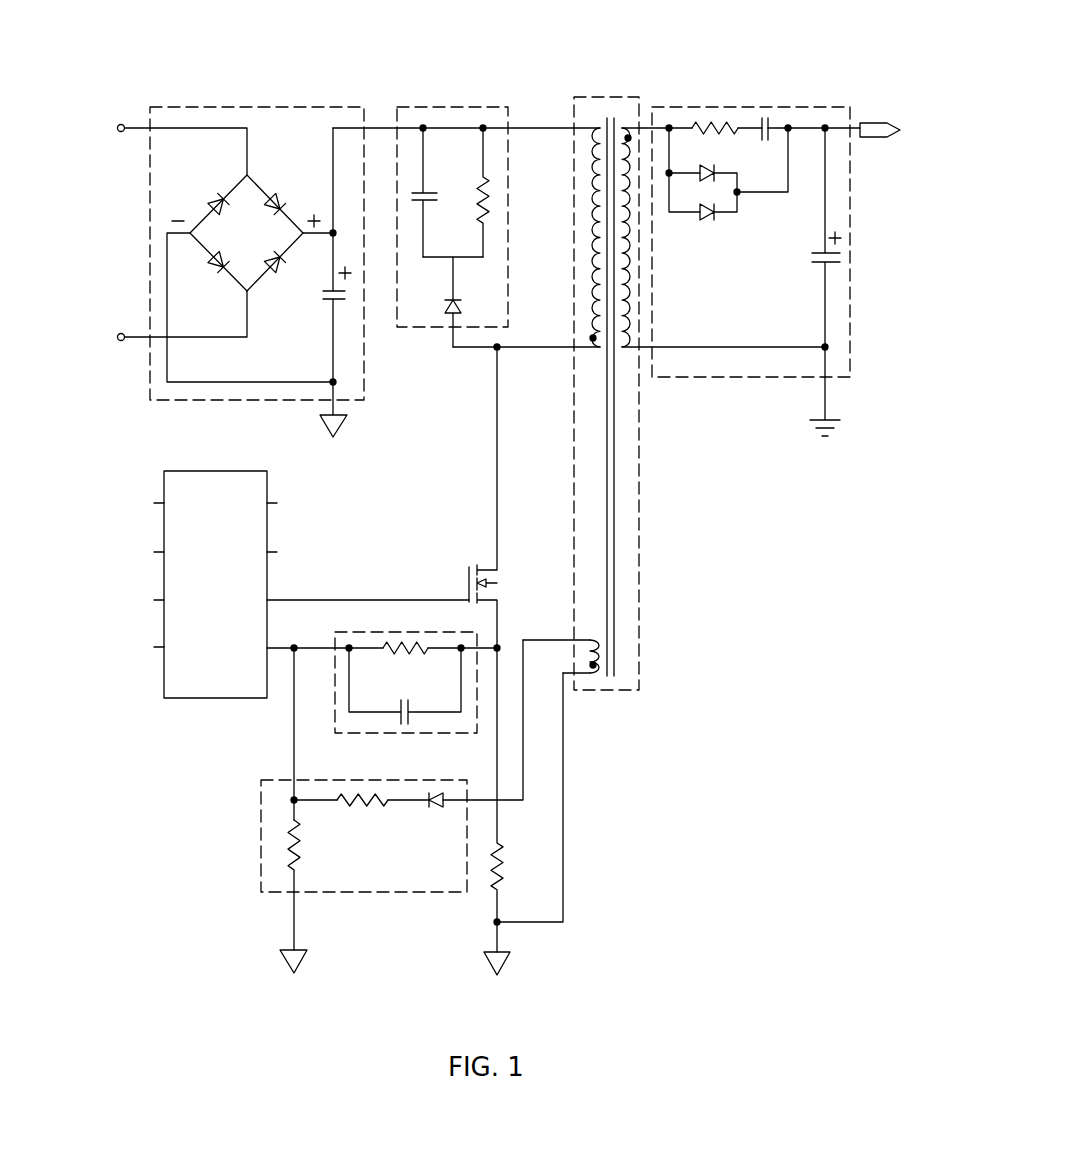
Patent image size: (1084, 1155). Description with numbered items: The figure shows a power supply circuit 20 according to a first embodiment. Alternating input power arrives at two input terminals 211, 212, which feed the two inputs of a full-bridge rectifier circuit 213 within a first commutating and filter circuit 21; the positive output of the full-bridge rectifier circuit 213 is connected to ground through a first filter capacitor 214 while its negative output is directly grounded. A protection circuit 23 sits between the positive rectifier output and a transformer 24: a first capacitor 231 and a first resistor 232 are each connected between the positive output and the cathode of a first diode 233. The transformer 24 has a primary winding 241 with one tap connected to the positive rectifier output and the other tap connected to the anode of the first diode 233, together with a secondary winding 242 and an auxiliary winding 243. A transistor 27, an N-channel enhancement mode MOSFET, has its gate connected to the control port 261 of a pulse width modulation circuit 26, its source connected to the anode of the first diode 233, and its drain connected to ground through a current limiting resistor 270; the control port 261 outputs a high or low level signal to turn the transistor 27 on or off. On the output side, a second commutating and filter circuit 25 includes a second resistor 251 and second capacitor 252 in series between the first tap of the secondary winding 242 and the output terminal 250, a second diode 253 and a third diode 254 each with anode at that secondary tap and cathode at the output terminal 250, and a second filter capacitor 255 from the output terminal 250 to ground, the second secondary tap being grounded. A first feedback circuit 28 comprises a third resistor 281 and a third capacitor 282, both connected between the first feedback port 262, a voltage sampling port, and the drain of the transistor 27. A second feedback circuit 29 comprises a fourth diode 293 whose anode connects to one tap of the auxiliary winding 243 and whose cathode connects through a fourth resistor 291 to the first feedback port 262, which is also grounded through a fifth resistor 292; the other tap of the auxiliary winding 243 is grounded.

The power supply circuit 20 is at (502, 487).
The first commutating and filter circuit 21 is at (328, 107).
The input terminal 211 is at (121, 124).
The input terminal 212 is at (121, 334).
The full-bridge rectifier circuit 213 is at (253, 208).
The first filter capacitor 214 is at (350, 298).
The protection circuit 23 is at (453, 105).
The first capacitor 231 is at (412, 197).
The first resistor 232 is at (488, 203).
The first diode 233 is at (463, 308).
The transformer 24 is at (598, 107).
The primary winding 241 is at (593, 322).
The secondary winding 242 is at (631, 330).
The auxiliary winding 243 is at (593, 657).
The second commutating and filter circuit 25 is at (723, 107).
The output terminal 250 is at (870, 123).
The second resistor 251 is at (707, 120).
The second capacitor 252 is at (765, 113).
The second diode 253 is at (708, 157).
The third diode 254 is at (709, 216).
The second filter capacitor 255 is at (840, 260).
The pulse width modulation circuit 26 is at (193, 678).
The control port 261 is at (268, 598).
The first feedback port 262 is at (268, 655).
The transistor 27 is at (500, 581).
The current limiting resistor 270 is at (503, 875).
The first feedback circuit 28 is at (468, 733).
The third resistor 281 is at (407, 638).
The third capacitor 282 is at (395, 720).
The second feedback circuit 29 is at (261, 838).
The fourth resistor 291 is at (360, 807).
The fifth resistor 292 is at (298, 853).
The fourth diode 293 is at (433, 810).